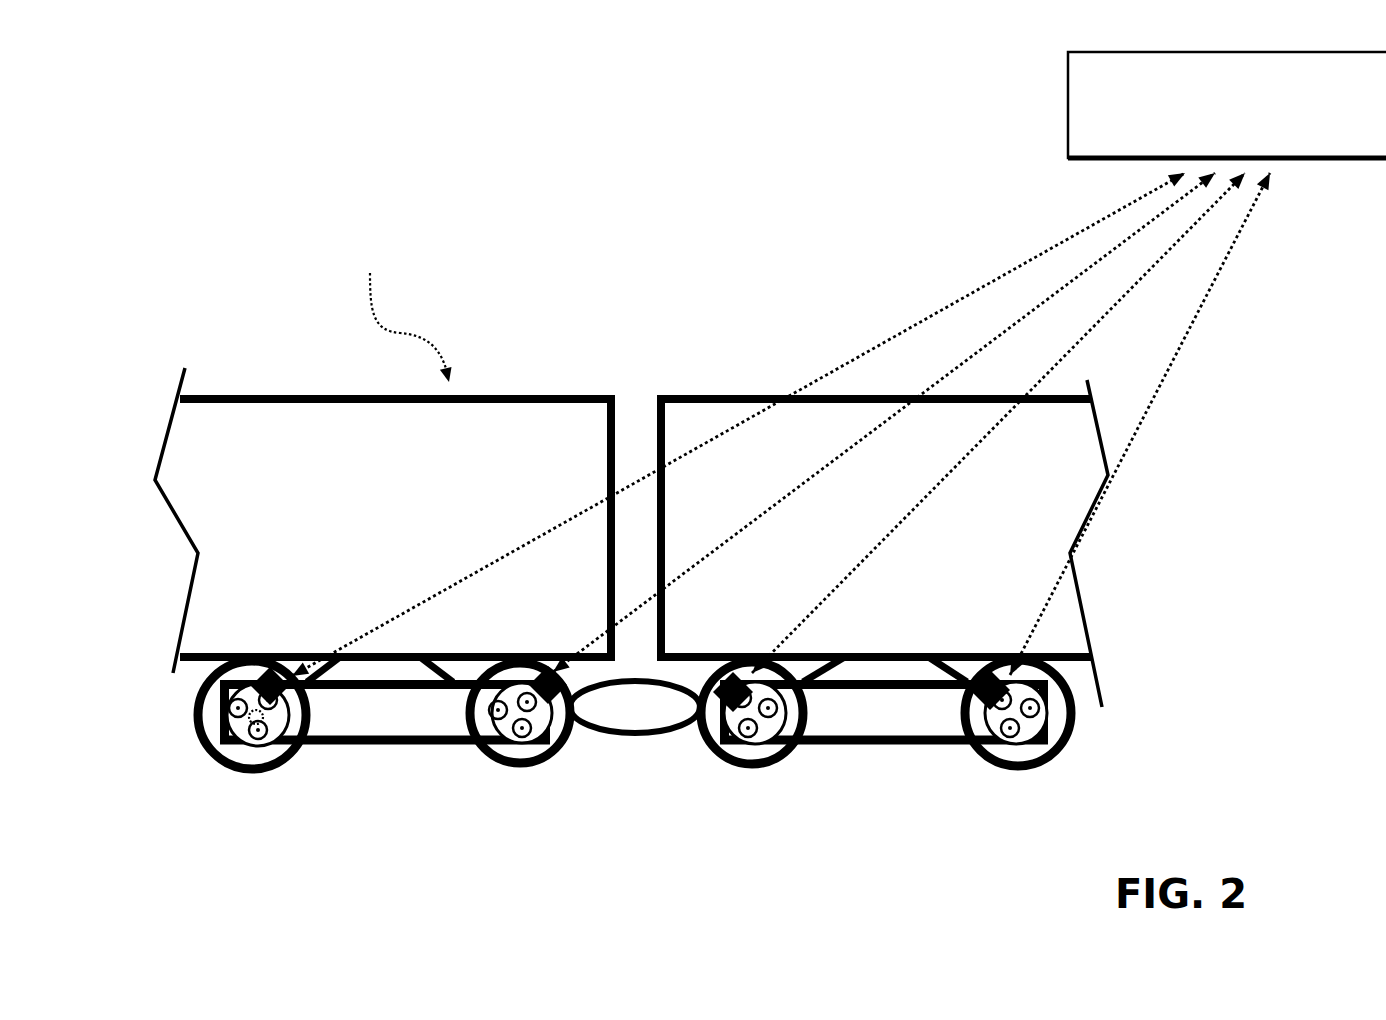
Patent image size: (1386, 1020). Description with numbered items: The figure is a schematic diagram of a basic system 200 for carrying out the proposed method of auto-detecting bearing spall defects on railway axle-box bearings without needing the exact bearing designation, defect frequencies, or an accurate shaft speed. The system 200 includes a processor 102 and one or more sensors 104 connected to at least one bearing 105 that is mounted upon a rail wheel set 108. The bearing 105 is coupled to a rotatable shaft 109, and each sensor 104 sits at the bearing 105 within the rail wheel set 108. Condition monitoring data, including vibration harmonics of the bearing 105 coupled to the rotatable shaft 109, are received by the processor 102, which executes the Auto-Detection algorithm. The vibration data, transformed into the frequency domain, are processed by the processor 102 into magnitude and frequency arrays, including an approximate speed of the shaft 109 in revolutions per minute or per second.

The system 200 is at (790, 183).
The processor 102 is at (1227, 105).
The sensor 104 is at (297, 700).
The bearing 105 is at (240, 725).
The rail wheel set 108 is at (230, 768).
The rotatable shaft 109 is at (253, 706).